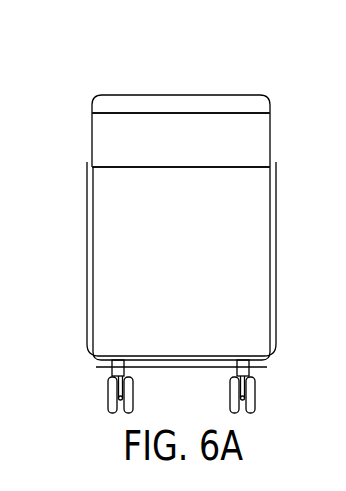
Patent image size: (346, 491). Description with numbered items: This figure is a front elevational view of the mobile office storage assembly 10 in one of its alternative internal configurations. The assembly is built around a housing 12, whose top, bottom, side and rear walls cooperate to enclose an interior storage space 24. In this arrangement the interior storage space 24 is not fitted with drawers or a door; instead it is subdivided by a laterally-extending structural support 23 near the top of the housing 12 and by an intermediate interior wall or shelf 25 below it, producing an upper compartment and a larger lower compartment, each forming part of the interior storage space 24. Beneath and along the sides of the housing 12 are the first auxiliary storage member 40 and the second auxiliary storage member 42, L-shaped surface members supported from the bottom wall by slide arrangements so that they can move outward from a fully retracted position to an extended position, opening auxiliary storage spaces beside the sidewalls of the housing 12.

The mobile office storage assembly 10 is at (227, 69).
The housing 12 is at (275, 96).
The laterally-extending structural supports 23 is at (127, 112).
The interior storage space 24 is at (198, 149).
The intermediate interior walls or shelves 25 is at (125, 165).
The first auxiliary storage member 40 is at (281, 229).
The second auxiliary storage member 42 is at (85, 272).